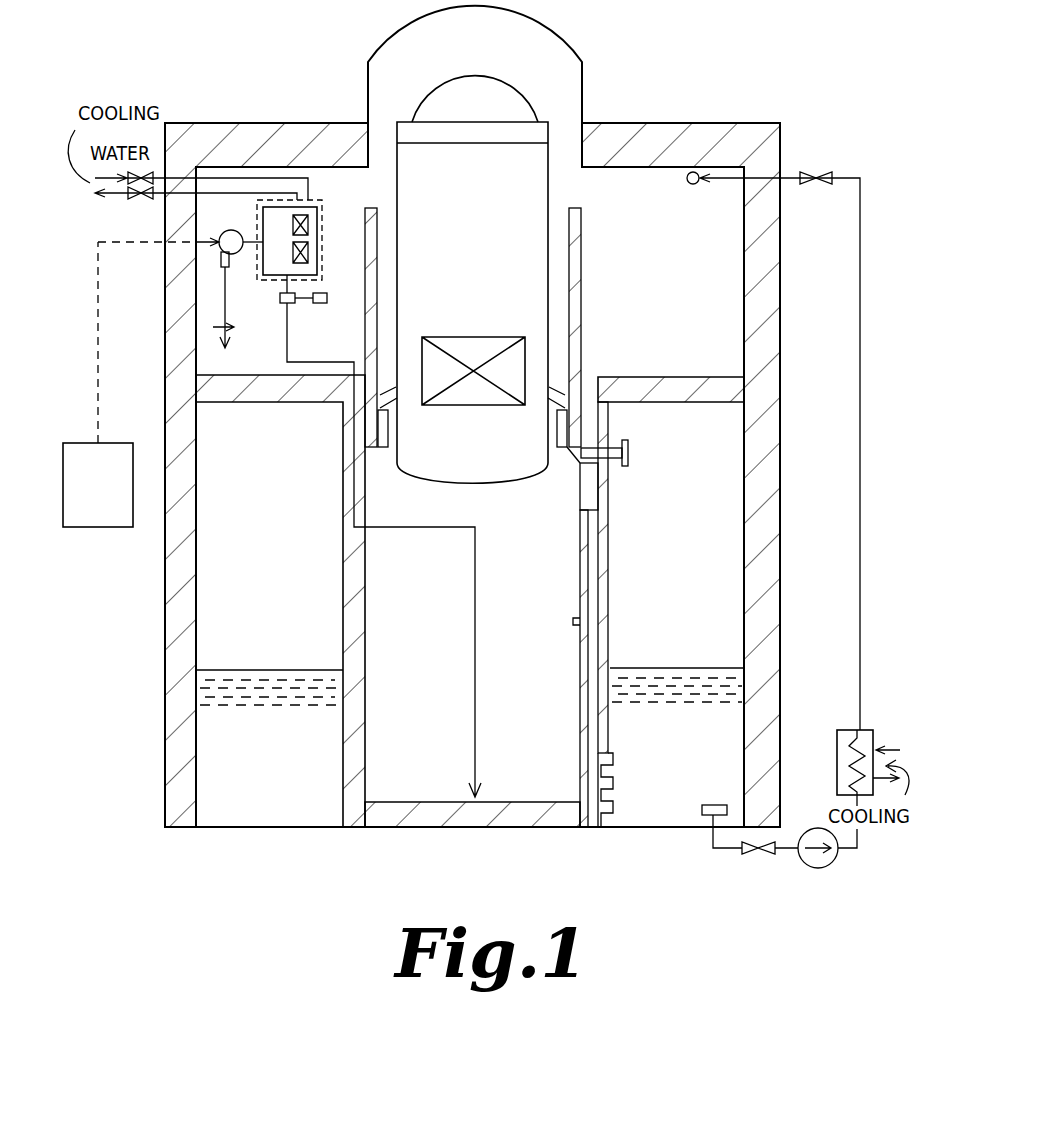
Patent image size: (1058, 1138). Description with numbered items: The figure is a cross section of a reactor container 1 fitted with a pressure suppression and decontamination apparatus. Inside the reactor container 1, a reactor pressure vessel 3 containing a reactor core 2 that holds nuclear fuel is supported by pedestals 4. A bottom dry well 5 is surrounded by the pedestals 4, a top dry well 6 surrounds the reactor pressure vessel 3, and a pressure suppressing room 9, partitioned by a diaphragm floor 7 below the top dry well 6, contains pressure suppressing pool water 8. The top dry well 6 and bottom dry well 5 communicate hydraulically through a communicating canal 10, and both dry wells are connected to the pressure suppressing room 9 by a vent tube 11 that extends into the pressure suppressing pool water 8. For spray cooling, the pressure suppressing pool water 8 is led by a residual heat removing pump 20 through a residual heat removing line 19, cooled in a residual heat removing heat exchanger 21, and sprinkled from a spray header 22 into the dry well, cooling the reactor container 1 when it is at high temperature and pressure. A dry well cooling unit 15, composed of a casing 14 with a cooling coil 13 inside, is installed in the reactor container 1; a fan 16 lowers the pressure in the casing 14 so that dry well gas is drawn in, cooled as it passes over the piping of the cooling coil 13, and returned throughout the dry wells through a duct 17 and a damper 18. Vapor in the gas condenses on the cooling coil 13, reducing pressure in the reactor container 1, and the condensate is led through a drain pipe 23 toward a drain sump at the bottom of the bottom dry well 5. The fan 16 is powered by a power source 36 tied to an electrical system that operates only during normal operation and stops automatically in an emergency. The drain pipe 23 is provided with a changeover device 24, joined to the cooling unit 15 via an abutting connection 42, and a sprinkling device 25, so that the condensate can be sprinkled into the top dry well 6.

The reactor container 1 is at (766, 341).
The reactor core 2 is at (486, 337).
The reactor pressure vessel 3 is at (496, 88).
The pedestals 4 is at (360, 580).
The bottom dry well 5 is at (448, 790).
The top dry well 6 is at (637, 167).
The diaphragm floor 7 is at (670, 377).
The pressure suppressing pool water 8 is at (655, 810).
The pressure suppressing room 9 is at (769, 507).
The communicating canal 10 is at (586, 498).
The vent tube 11 is at (596, 727).
The cooling coil 13 is at (308, 250).
The casing 14 is at (318, 270).
The dry well cooling unit 15 is at (257, 210).
The fan 16 is at (220, 256).
The duct 17 is at (225, 298).
The damper 18 is at (226, 332).
The residual heat removing line 19 is at (862, 372).
The residual heat removing pump 20 is at (818, 869).
The residual heat removing heat exchanger 21 is at (866, 730).
The spray header 22 is at (689, 172).
The drain pipe 23 is at (476, 598).
The changeover device 24 is at (280, 304).
The sprinkling device 25 is at (320, 303).
The power source 36 is at (103, 527).
The abutting connection 42 is at (278, 283).